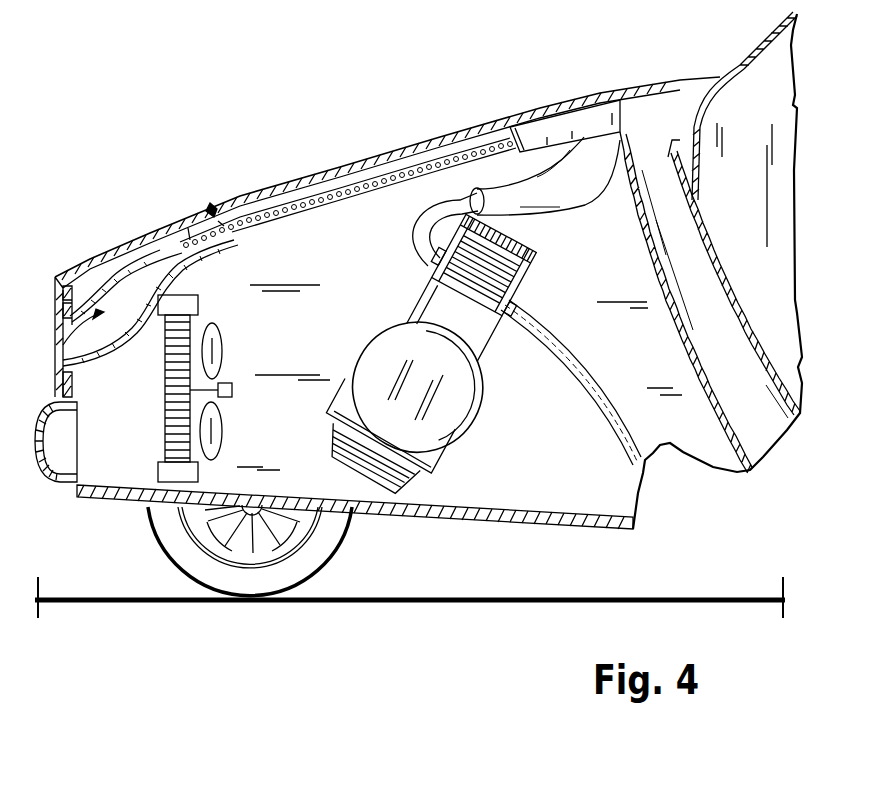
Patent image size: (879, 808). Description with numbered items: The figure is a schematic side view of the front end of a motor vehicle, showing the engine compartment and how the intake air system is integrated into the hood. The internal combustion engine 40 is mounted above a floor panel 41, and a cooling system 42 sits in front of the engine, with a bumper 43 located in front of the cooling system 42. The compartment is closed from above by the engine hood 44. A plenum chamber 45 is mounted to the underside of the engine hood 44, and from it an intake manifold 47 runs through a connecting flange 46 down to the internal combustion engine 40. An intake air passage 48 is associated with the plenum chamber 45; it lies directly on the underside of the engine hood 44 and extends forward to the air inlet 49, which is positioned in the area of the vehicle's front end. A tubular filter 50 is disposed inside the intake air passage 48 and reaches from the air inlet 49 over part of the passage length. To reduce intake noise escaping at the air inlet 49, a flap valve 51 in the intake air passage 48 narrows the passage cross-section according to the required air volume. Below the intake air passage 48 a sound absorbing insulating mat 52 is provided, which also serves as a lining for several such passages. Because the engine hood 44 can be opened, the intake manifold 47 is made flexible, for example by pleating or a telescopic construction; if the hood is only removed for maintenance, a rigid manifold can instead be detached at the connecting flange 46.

The internal combustion engine 40 is at (505, 407).
The floor panel 41 is at (427, 510).
The cooling system 42 is at (155, 436).
The bumper 43 is at (63, 485).
The engine hood 44 is at (460, 131).
The plenum chamber 45 is at (552, 128).
The connecting flange 46 is at (636, 134).
The intake manifold 47 is at (540, 278).
The intake air passage 48 is at (392, 166).
The air inlet 49 is at (46, 341).
The tubular filter 50 is at (130, 265).
The flap valve 51 is at (207, 200).
The sound absorbing insulating mat 52 is at (313, 205).